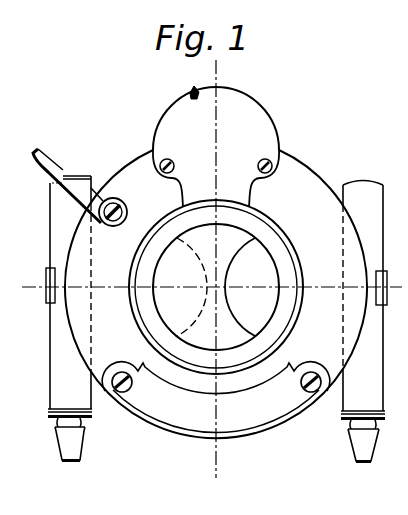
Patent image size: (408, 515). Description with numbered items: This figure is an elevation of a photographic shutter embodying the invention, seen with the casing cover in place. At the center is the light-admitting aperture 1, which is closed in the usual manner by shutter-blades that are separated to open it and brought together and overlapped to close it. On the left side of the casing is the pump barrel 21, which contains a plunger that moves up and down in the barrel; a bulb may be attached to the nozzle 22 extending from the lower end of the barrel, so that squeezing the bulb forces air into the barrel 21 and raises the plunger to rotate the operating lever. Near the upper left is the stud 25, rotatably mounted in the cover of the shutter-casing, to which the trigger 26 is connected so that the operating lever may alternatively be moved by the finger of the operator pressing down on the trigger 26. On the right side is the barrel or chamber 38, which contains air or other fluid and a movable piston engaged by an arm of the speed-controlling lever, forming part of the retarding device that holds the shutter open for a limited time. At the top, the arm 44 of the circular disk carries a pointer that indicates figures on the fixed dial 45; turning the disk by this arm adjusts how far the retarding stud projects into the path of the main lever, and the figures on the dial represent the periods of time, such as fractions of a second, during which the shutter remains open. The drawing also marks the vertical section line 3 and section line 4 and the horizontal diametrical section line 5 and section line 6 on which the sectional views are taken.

The light-admitting aperture 1 is at (260, 256).
The pump barrel 21 is at (52, 217).
The nozzle 22 is at (66, 448).
The stud 25 is at (110, 203).
The trigger 26 is at (61, 172).
The barrel or chamber 38 is at (362, 200).
The arm 44 is at (189, 93).
The fixed dial 45 is at (253, 155).
The section line 3— 3 is at (243, 68).
The section line 4— 4 is at (253, 270).
The section line 5— 5 is at (216, 327).
The section line 6— 6 is at (30, 311).